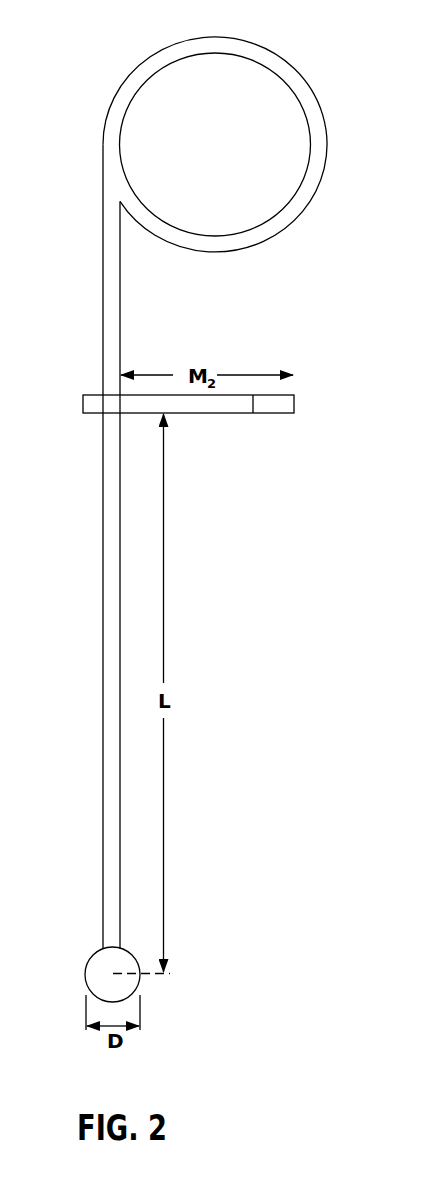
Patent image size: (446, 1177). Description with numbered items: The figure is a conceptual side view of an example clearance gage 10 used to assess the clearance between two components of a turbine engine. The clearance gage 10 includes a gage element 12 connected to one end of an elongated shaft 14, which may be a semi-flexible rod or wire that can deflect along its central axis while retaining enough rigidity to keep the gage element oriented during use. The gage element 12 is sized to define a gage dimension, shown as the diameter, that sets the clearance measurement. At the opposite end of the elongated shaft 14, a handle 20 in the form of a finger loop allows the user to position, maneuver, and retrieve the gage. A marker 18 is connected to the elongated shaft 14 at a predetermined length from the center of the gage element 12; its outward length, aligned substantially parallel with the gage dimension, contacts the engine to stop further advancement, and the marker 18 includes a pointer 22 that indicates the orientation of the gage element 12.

The clearance gage 10 is at (132, 36).
The gage element 12 is at (100, 968).
The elongated shaft 14 is at (112, 643).
The marker 18 is at (195, 403).
The handle 20 is at (292, 80).
The pointer 22 is at (283, 418).